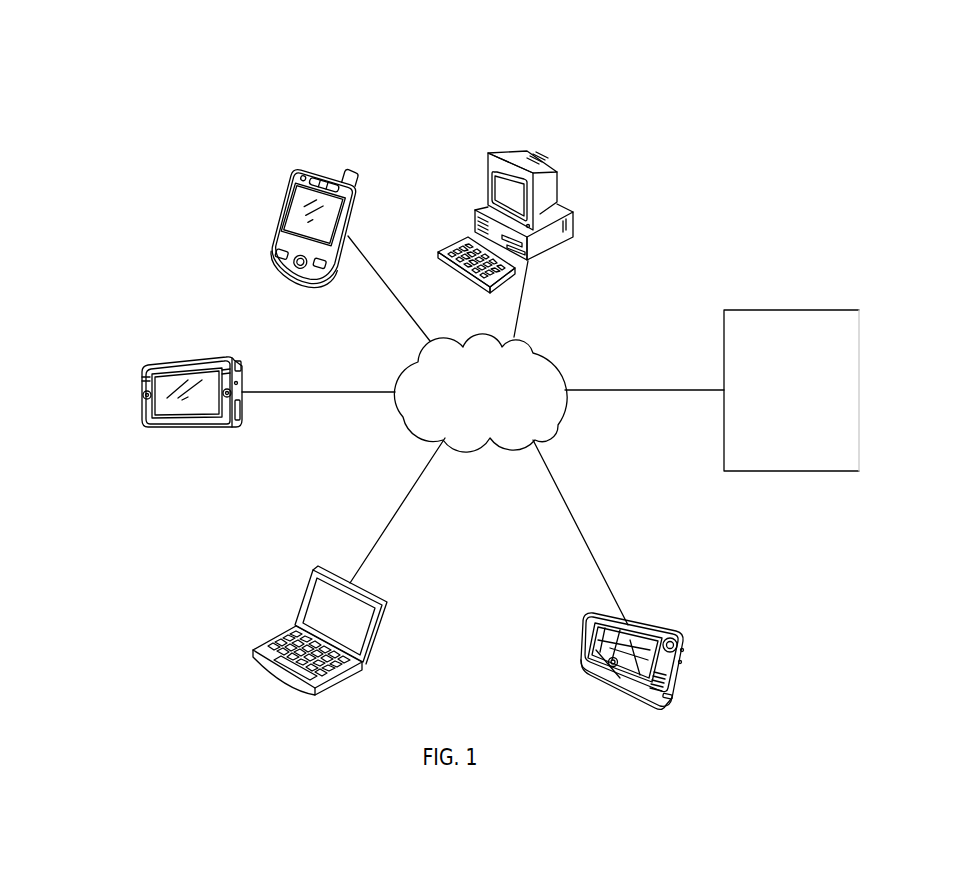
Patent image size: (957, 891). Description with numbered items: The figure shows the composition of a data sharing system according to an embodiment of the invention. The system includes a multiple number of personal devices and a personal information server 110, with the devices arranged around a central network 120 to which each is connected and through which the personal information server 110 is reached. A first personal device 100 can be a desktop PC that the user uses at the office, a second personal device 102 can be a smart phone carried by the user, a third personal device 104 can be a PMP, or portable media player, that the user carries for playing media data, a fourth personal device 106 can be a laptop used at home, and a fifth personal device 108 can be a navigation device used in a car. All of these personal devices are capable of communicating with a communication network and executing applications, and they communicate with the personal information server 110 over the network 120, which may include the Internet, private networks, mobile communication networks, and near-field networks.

The first personal device 100 is at (495, 153).
The second personal device 102 is at (352, 167).
The third personal device 104 is at (140, 388).
The fourth personal device 106 is at (377, 646).
The fifth personal device 108 is at (680, 680).
The personal information server 110 is at (799, 310).
The network 120 is at (532, 346).